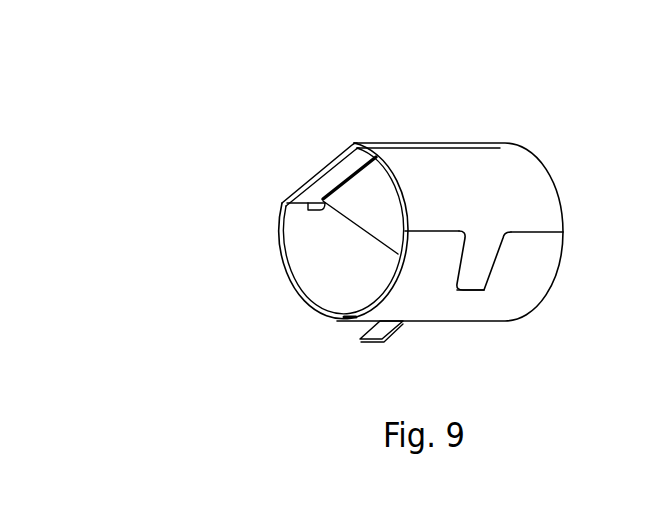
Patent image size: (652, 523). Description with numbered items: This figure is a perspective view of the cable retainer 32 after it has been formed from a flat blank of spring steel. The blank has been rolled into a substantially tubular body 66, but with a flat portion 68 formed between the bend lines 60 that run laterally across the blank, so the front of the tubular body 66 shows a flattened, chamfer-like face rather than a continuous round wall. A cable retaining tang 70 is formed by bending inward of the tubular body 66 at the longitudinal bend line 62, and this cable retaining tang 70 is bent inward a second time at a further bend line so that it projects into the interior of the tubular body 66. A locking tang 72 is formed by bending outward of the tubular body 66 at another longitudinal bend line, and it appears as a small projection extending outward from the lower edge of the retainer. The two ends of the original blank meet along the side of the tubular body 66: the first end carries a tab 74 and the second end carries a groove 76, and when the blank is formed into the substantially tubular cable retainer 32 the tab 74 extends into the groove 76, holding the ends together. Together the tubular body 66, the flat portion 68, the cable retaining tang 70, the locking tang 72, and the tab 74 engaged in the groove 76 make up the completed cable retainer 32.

The cable retainer 32 is at (268, 110).
The bend lines 60 is at (288, 210).
The bend line 62 is at (336, 170).
The tubular body 66 is at (500, 199).
The flat portion 68 is at (333, 176).
The cable retaining tang 70 is at (380, 207).
The locking tang 72 is at (368, 342).
The tab 74 is at (473, 277).
The groove 76 is at (466, 293).